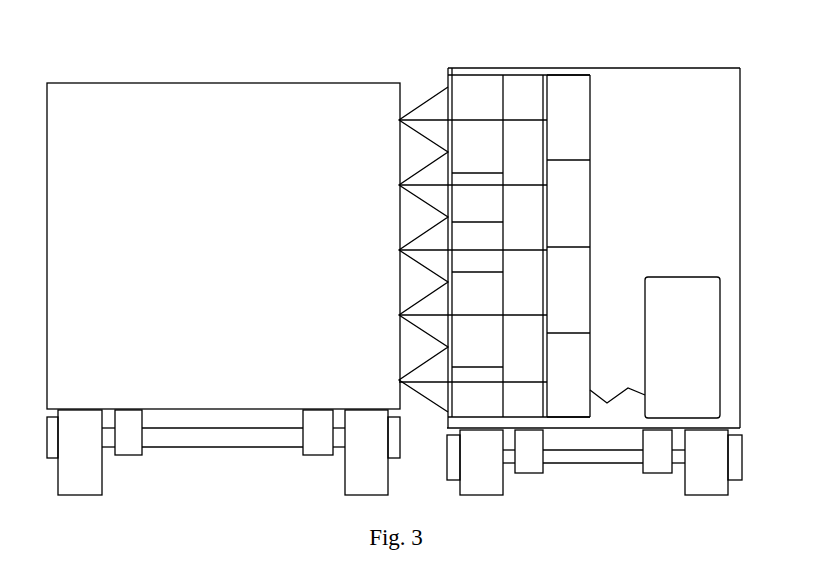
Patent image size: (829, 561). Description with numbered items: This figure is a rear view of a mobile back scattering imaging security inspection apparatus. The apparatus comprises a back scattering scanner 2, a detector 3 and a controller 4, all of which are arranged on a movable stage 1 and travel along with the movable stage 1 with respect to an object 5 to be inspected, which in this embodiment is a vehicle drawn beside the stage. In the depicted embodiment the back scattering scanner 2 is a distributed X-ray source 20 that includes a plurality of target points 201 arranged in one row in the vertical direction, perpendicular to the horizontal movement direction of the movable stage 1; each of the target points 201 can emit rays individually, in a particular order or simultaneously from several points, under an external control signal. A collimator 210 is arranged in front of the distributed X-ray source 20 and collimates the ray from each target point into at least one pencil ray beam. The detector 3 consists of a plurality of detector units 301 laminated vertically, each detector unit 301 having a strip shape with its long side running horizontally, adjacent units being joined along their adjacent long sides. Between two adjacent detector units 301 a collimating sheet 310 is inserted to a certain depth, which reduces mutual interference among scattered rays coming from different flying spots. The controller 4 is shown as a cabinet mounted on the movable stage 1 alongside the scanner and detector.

The movable stage 1 is at (680, 162).
The back scattering scanner 2 is at (567, 167).
The distributed X-ray source 20 is at (592, 155).
The target points 201 is at (551, 70).
The collimator 210 is at (549, 79).
The detector 3 is at (475, 163).
The detector units 301 is at (467, 96).
The collimating sheet 310 is at (447, 74).
The controller 4 is at (690, 295).
The object to be inspected 5 is at (167, 125).